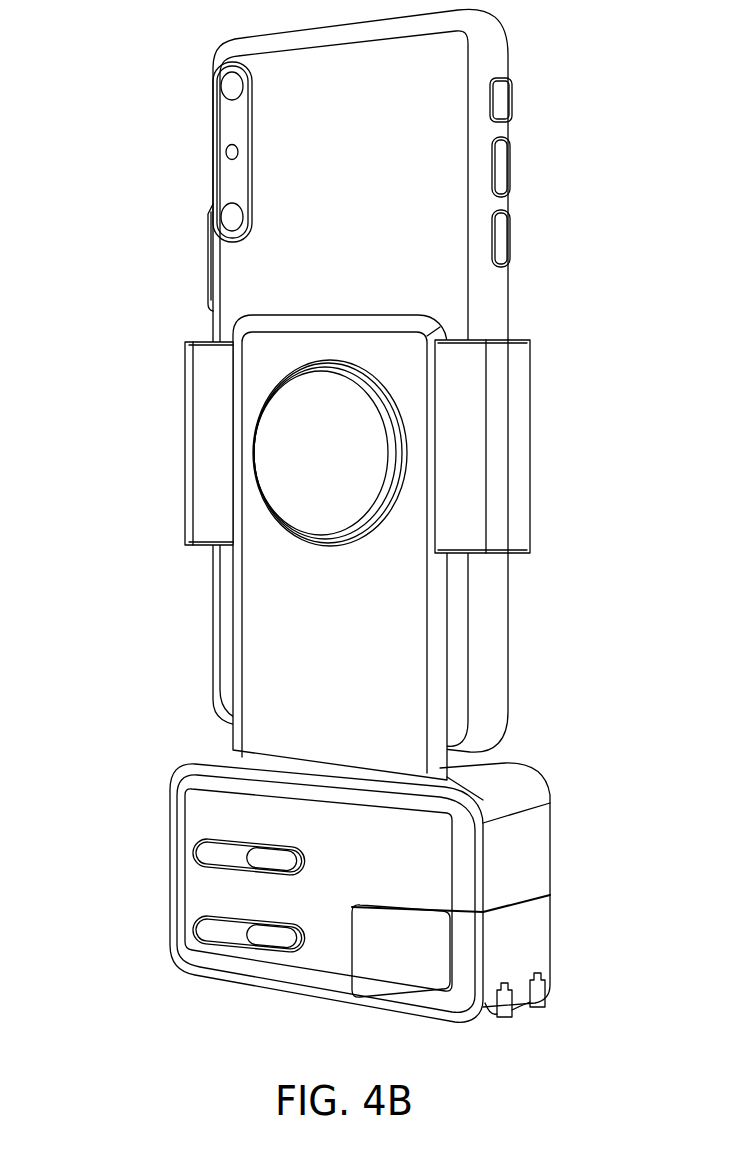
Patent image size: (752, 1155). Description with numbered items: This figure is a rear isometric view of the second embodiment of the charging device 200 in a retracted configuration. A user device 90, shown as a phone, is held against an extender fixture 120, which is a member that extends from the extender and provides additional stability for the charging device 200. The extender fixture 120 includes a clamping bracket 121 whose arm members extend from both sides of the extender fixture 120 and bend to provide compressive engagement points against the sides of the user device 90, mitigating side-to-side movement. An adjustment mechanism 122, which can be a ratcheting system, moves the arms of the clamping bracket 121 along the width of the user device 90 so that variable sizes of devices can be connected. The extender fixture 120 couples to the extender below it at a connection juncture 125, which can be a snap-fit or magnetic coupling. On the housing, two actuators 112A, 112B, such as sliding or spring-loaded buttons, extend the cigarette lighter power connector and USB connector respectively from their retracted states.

The charging device 200 is at (170, 262).
The user device 90 is at (413, 238).
The extender fixture 120 is at (397, 692).
The clamping bracket 121 is at (185, 520).
The adjustment mechanism 122 is at (342, 487).
The connection juncture 125 is at (490, 768).
The actuator 112A is at (213, 850).
The actuator 112B is at (213, 927).